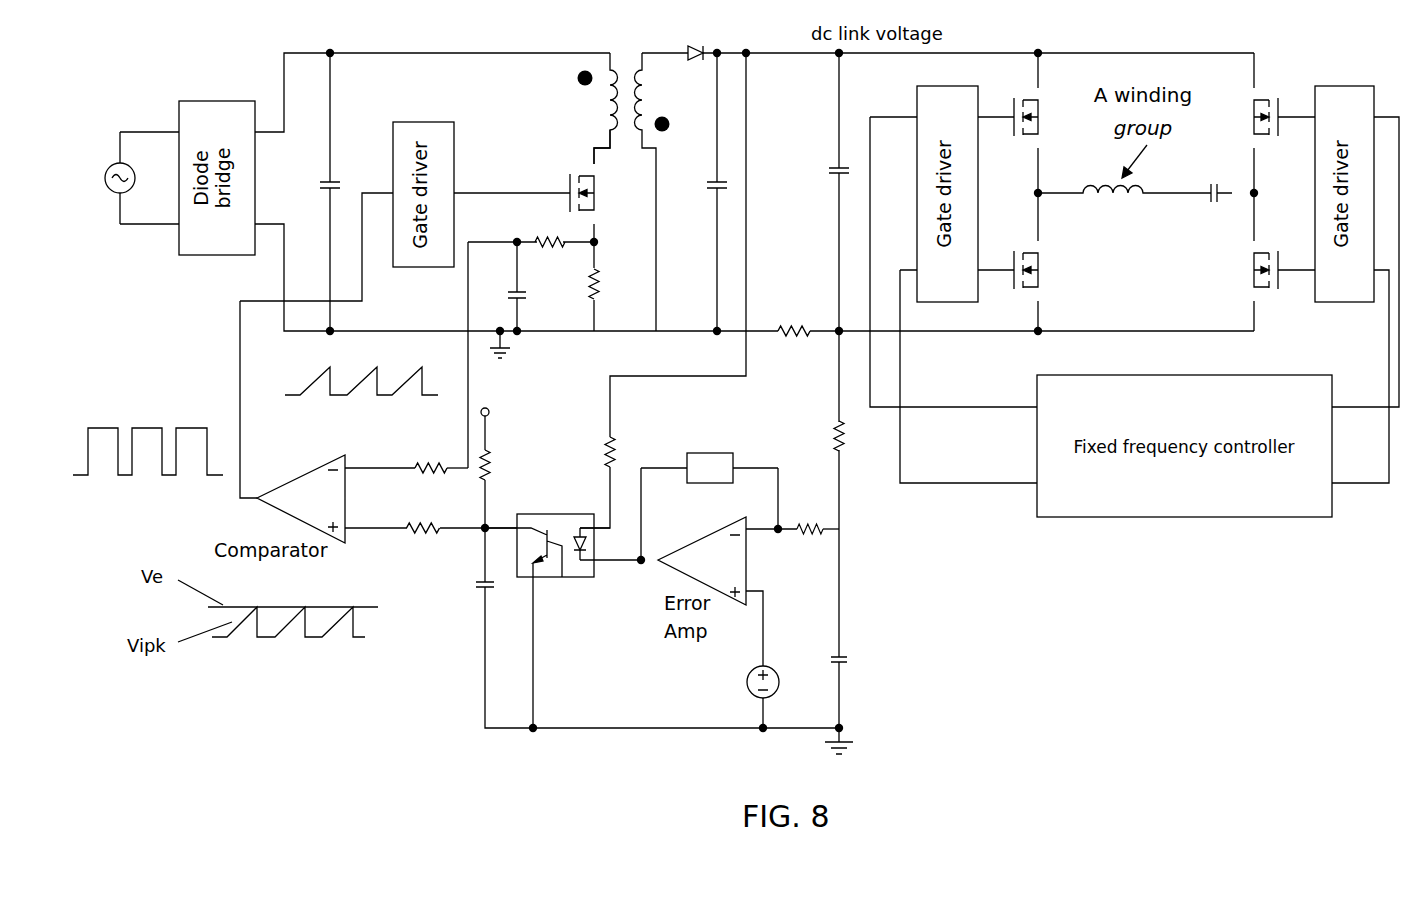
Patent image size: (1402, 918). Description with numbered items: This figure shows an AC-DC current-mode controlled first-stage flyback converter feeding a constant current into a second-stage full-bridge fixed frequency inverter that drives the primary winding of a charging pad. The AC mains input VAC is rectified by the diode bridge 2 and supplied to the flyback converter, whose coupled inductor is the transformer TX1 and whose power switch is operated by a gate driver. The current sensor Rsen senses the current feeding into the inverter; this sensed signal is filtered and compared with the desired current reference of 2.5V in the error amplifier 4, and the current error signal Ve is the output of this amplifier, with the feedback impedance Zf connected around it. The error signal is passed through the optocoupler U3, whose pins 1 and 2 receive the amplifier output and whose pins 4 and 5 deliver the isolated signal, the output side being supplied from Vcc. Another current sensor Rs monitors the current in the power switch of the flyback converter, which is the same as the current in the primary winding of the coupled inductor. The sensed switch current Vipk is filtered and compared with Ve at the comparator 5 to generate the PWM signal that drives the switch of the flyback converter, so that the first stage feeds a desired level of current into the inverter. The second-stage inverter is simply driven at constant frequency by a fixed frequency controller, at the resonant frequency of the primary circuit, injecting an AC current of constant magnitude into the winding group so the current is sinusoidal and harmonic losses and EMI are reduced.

The optocoupler U3 pin 1 (LED anode) 1 is at (595, 520).
The diode bridge 2 is at (610, 550).
The error amplifier 4 is at (524, 645).
The comparator 5 is at (501, 518).
The optocoupler U3 is at (555, 534).
The flyback transformer TX1 is at (624, 179).
The current sensor Rs is at (607, 286).
The sensing resistor Rsen is at (788, 318).
The feedback impedance Zf is at (709, 493).
The supply voltage Vcc is at (490, 486).
The AC input source VAC is at (123, 178).
The current error signal Ve is at (377, 530).
The sensed switch current Vipk is at (393, 467).
The PWM signal PWM is at (180, 498).
The reference value 2.5V is at (778, 659).